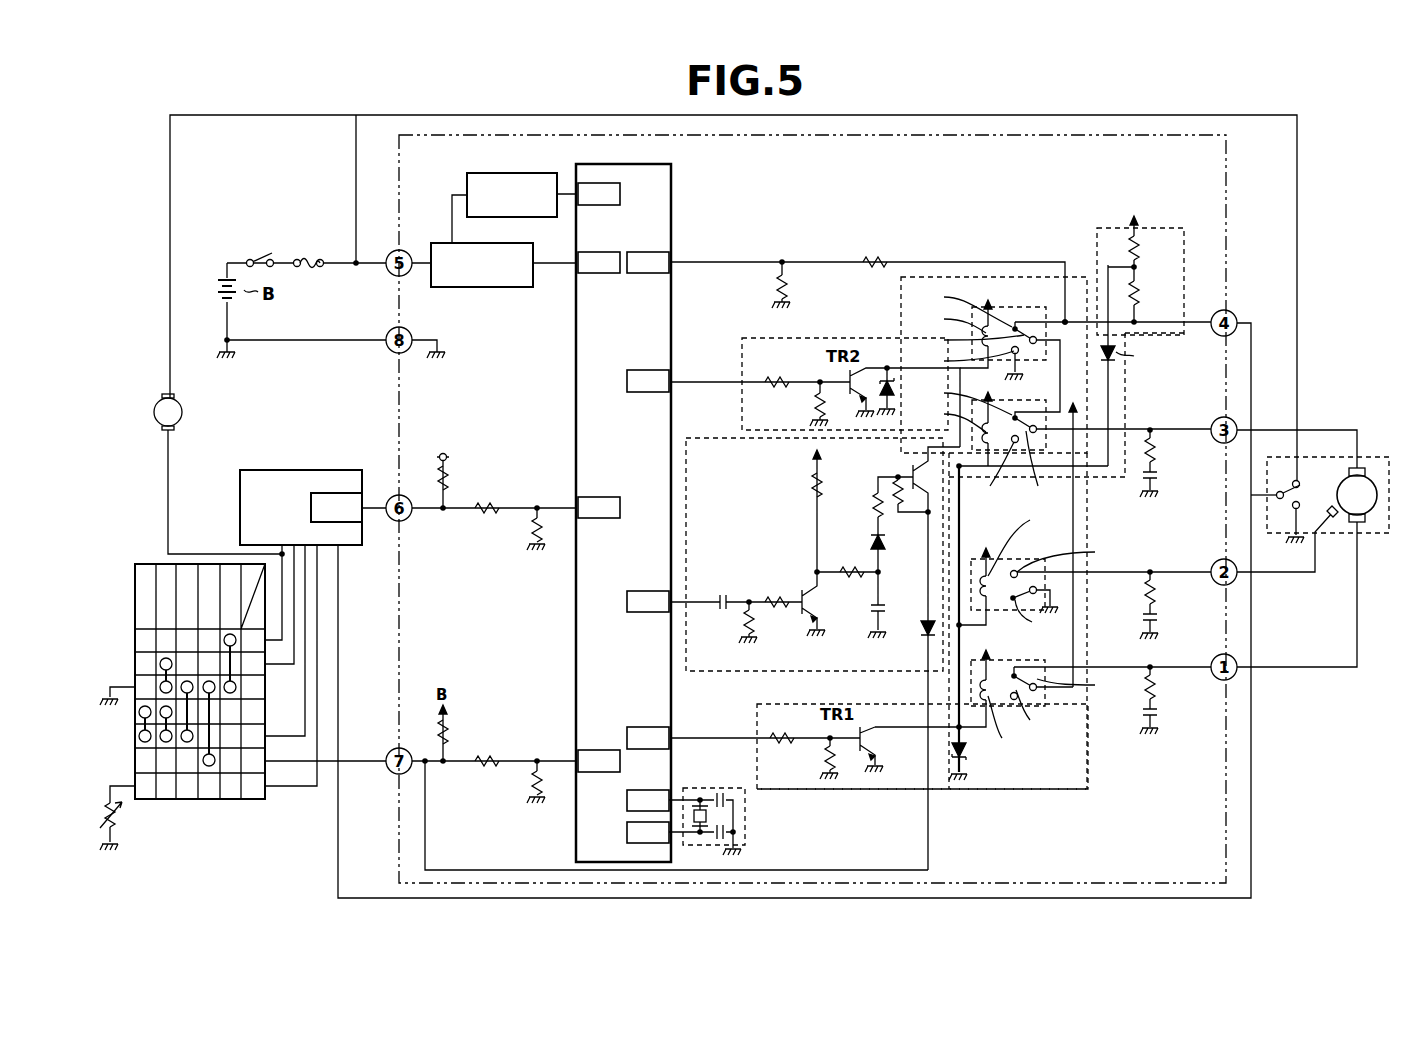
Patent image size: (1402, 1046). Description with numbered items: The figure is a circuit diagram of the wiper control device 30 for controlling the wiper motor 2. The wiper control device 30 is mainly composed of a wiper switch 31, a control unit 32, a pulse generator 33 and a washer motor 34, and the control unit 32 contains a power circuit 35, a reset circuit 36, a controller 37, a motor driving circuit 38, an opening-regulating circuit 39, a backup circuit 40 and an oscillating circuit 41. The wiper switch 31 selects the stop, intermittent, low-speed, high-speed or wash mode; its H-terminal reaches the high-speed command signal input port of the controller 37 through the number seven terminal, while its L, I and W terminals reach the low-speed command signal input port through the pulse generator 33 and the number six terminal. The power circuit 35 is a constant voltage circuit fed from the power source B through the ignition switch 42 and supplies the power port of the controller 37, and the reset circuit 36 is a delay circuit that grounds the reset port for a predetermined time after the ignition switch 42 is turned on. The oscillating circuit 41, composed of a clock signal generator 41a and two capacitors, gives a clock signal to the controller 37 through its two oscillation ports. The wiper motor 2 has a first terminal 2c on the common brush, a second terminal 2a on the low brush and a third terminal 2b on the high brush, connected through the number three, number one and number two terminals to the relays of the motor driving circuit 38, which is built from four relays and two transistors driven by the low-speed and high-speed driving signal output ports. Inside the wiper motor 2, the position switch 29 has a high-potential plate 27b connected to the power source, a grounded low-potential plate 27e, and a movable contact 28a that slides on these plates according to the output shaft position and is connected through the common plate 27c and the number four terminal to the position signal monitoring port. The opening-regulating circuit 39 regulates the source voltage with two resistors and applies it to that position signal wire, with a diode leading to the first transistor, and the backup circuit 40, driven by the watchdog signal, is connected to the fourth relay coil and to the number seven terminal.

The wiper control device 30 is at (1300, 218).
The wiper switch 31 is at (188, 802).
The control unit 32 is at (1226, 198).
The pulse generator 33 is at (304, 470).
The washer motor 34 is at (183, 410).
The power circuit 35 is at (485, 288).
The reset circuit 36 is at (465, 186).
The controller 37 is at (671, 206).
The motor driving circuit 38 is at (1014, 790).
The opening-regulating circuit 39 is at (1096, 234).
The backup circuit 40 is at (710, 672).
The oscillating circuit 41 is at (743, 823).
The clock signal generator 41a is at (746, 814).
The ignition switch 42 is at (265, 256).
The wiper motor 2 is at (1346, 476).
The second terminal 2a is at (1362, 522).
The third terminal 2b is at (1338, 520).
The first terminal 2c is at (1360, 468).
The high-potential plate 27b is at (1294, 480).
The common plate 27c is at (1276, 495).
The low-potential plate 27e is at (1292, 505).
The movable contact 28a is at (1283, 491).
The position switch 29 is at (1290, 516).